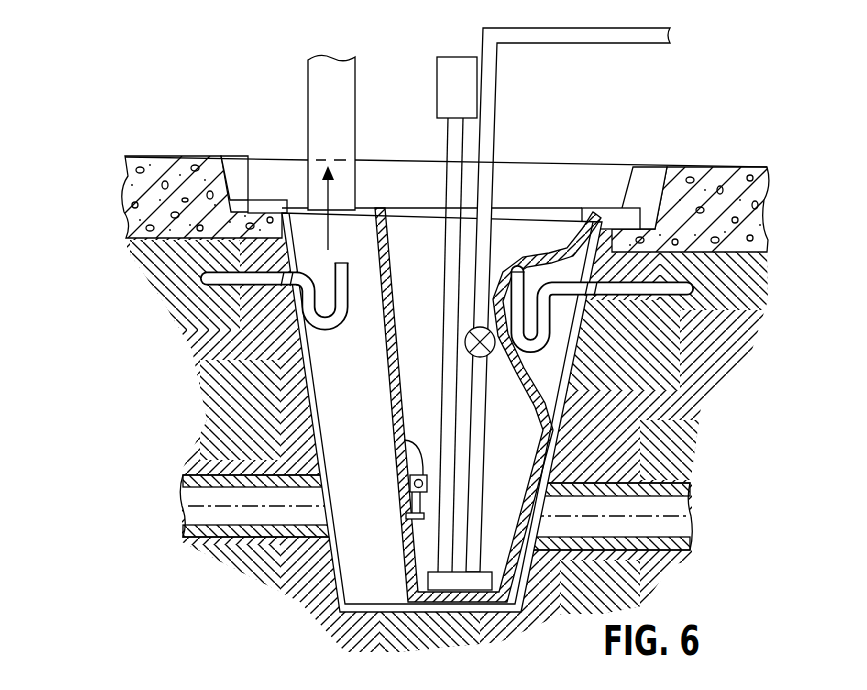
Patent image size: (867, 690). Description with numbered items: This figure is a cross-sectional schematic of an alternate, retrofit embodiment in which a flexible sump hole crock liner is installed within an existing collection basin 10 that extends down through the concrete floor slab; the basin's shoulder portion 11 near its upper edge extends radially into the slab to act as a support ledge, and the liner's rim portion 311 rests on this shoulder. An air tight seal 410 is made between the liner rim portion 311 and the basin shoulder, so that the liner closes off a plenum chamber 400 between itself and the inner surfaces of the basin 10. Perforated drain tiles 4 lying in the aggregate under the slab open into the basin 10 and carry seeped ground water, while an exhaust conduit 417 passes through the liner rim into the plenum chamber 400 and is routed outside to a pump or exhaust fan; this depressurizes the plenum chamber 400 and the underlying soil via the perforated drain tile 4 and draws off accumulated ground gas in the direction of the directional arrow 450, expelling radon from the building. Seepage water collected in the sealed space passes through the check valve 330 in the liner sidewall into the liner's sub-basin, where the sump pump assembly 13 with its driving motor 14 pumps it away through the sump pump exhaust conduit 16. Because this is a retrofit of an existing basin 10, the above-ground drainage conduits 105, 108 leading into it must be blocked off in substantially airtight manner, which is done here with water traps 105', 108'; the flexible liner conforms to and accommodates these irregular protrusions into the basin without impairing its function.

The perforated drain tile 4 is at (200, 506).
The collection basin 10 is at (600, 272).
The shoulder portion 11 is at (660, 230).
The sump pump assembly 13 is at (459, 50).
The driving motor 14 is at (466, 85).
The sump pump exhaust conduit 16 is at (602, 36).
The above-ground drainage conduit 105 is at (192, 302).
The water trap 105' is at (336, 328).
The above-ground drainage conduit 108 is at (627, 319).
The water trap 108' is at (550, 323).
The collar lip 311 is at (603, 217).
The check valve 330 is at (394, 444).
The plenum chamber 400 is at (307, 245).
The air tight seal 410 is at (620, 218).
The exhaust conduit 417 is at (336, 78).
The directional arrow 450 is at (347, 203).